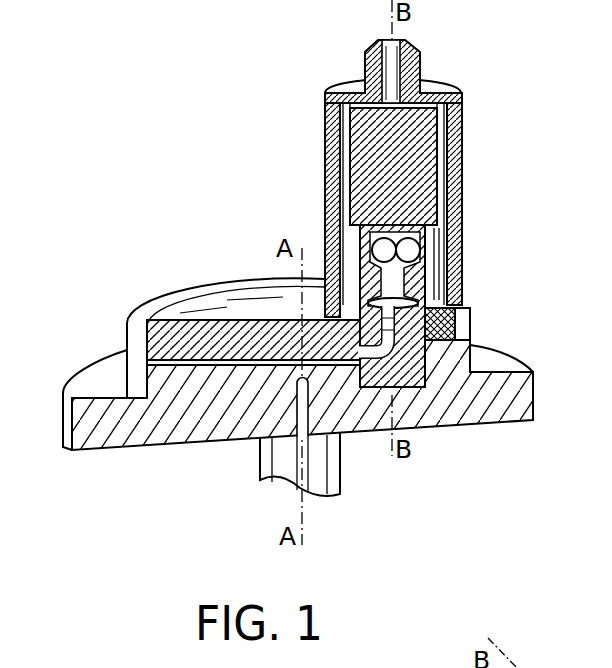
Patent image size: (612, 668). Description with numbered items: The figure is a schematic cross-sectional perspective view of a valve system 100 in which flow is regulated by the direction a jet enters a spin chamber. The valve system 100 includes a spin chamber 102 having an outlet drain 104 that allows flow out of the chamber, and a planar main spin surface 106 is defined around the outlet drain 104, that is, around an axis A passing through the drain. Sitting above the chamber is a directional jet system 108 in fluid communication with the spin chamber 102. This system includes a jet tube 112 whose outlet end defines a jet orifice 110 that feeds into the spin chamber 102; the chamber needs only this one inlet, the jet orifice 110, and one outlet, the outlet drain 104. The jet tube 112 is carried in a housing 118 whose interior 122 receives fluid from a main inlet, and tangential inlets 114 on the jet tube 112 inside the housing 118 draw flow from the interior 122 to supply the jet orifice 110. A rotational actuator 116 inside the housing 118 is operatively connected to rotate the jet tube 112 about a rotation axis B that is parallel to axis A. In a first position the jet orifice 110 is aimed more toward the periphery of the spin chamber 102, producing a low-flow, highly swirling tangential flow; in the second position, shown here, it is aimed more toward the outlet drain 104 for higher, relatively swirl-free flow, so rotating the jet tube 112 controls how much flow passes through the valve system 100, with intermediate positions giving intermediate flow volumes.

The valve system 100 is at (173, 72).
The spin chamber 102 is at (144, 326).
The outlet drain 104 is at (315, 413).
The main spin surface 106 is at (214, 373).
The directional jet system 108 is at (312, 98).
The jet orifice 110 is at (377, 351).
The jet tube 112 is at (330, 369).
The tangential inlets 114 is at (440, 252).
The rotational actuator 116 is at (367, 152).
The housing 118 is at (462, 90).
The interior 122 is at (442, 280).